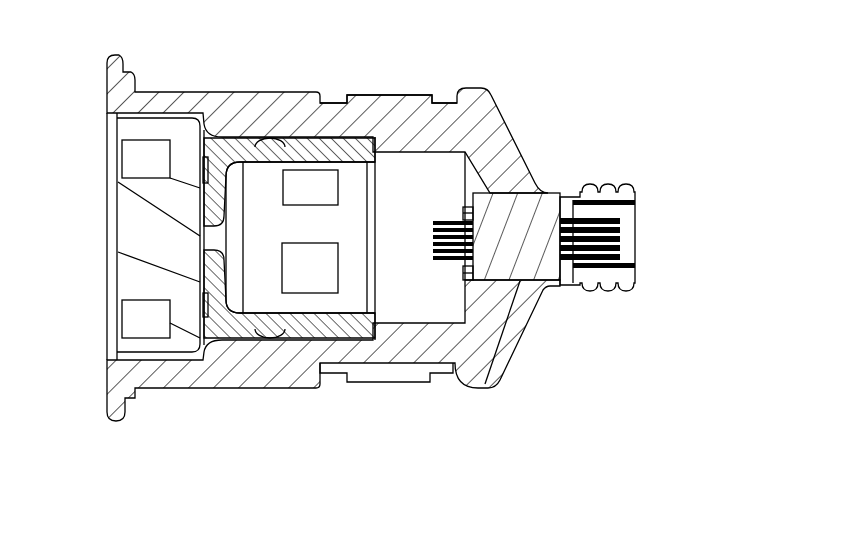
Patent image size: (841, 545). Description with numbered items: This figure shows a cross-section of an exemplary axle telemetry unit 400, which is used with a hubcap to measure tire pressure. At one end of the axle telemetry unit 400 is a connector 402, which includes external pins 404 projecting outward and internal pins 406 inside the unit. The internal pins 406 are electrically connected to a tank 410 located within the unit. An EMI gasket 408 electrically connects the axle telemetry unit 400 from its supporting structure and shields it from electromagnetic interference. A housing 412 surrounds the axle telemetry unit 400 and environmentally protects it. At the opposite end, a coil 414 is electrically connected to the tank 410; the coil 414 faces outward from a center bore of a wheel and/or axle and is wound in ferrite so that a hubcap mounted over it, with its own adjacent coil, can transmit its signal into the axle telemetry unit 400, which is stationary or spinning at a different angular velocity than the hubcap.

The axle telemetry unit 400 is at (570, 97).
The connector 402 is at (548, 289).
The external pins 404 is at (620, 240).
The internal pins 406 is at (447, 250).
The EMI gasket 408 is at (390, 102).
The tank 410 is at (270, 262).
The housing 412 is at (283, 98).
The coil 414 is at (120, 303).